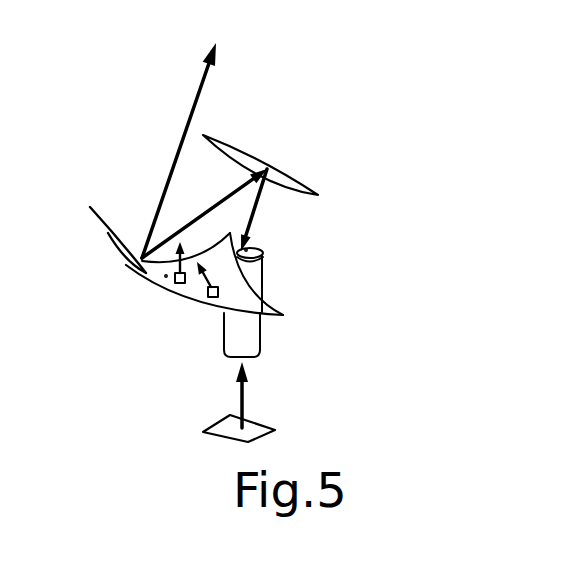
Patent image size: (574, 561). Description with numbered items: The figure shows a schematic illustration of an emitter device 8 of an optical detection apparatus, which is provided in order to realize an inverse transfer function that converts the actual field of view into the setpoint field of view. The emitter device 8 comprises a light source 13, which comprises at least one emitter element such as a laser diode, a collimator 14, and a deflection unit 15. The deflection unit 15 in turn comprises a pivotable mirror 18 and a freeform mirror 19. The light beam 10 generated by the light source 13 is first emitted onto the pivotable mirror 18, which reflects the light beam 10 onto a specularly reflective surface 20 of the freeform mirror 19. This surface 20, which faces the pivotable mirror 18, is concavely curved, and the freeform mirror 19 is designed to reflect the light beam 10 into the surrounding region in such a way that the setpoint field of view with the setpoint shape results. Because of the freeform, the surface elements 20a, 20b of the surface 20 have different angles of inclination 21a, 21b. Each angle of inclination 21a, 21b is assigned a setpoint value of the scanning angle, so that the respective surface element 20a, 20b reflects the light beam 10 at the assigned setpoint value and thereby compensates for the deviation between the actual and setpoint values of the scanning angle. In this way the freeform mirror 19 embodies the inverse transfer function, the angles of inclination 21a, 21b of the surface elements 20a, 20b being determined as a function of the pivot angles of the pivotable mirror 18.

The emitter device 8 is at (303, 88).
The light beam 10 is at (180, 130).
The light source 13 is at (203, 432).
The collimator 14 is at (255, 342).
The deflection unit 15 is at (359, 182).
The pivotable mirror 18 is at (287, 168).
The freeform mirror 19 is at (138, 262).
The specularly reflective surface 20 is at (138, 255).
The surface element 20a is at (170, 283).
The surface element 20b is at (209, 299).
The angle of inclination 21a is at (166, 276).
The angle of inclination 21b is at (246, 250).